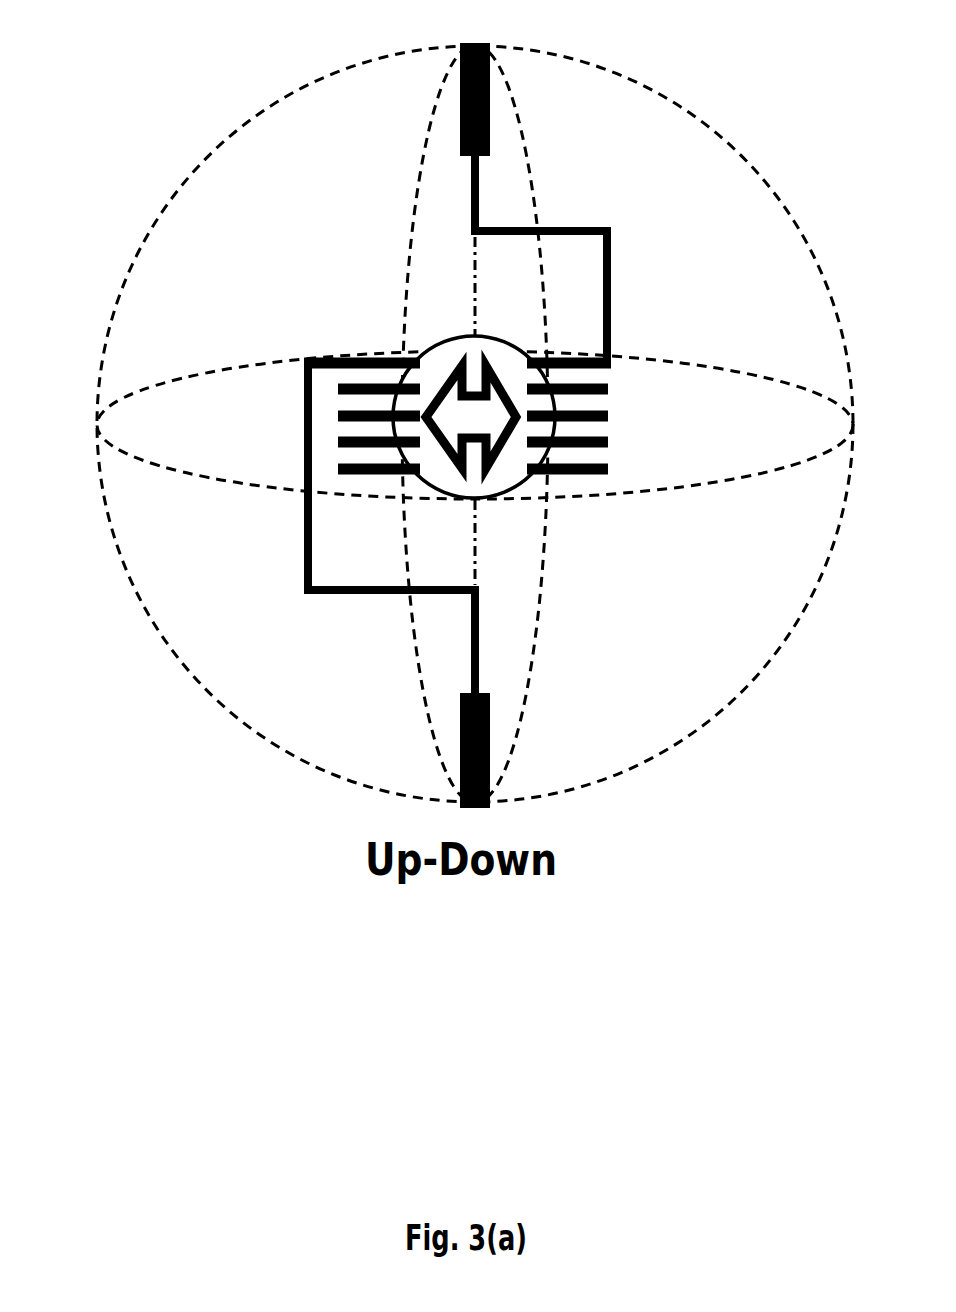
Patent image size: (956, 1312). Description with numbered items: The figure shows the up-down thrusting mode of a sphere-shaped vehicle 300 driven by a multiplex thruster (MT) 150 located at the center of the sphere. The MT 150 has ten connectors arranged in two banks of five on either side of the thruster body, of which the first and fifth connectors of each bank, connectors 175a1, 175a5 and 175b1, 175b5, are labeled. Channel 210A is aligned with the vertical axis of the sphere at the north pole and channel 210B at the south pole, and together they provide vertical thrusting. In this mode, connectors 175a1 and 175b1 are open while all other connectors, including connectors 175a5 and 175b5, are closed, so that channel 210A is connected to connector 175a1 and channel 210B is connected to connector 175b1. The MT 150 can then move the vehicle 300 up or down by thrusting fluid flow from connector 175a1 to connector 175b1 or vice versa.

The vehicle 300 is at (82, 44).
The multiplex thruster 150 is at (441, 297).
The channel 210A is at (543, 204).
The channel 210B is at (399, 584).
The connector 175a1 is at (557, 333).
The connector 175a5 is at (569, 508).
The connector 175b1 is at (362, 333).
The connector 175b5 is at (382, 508).